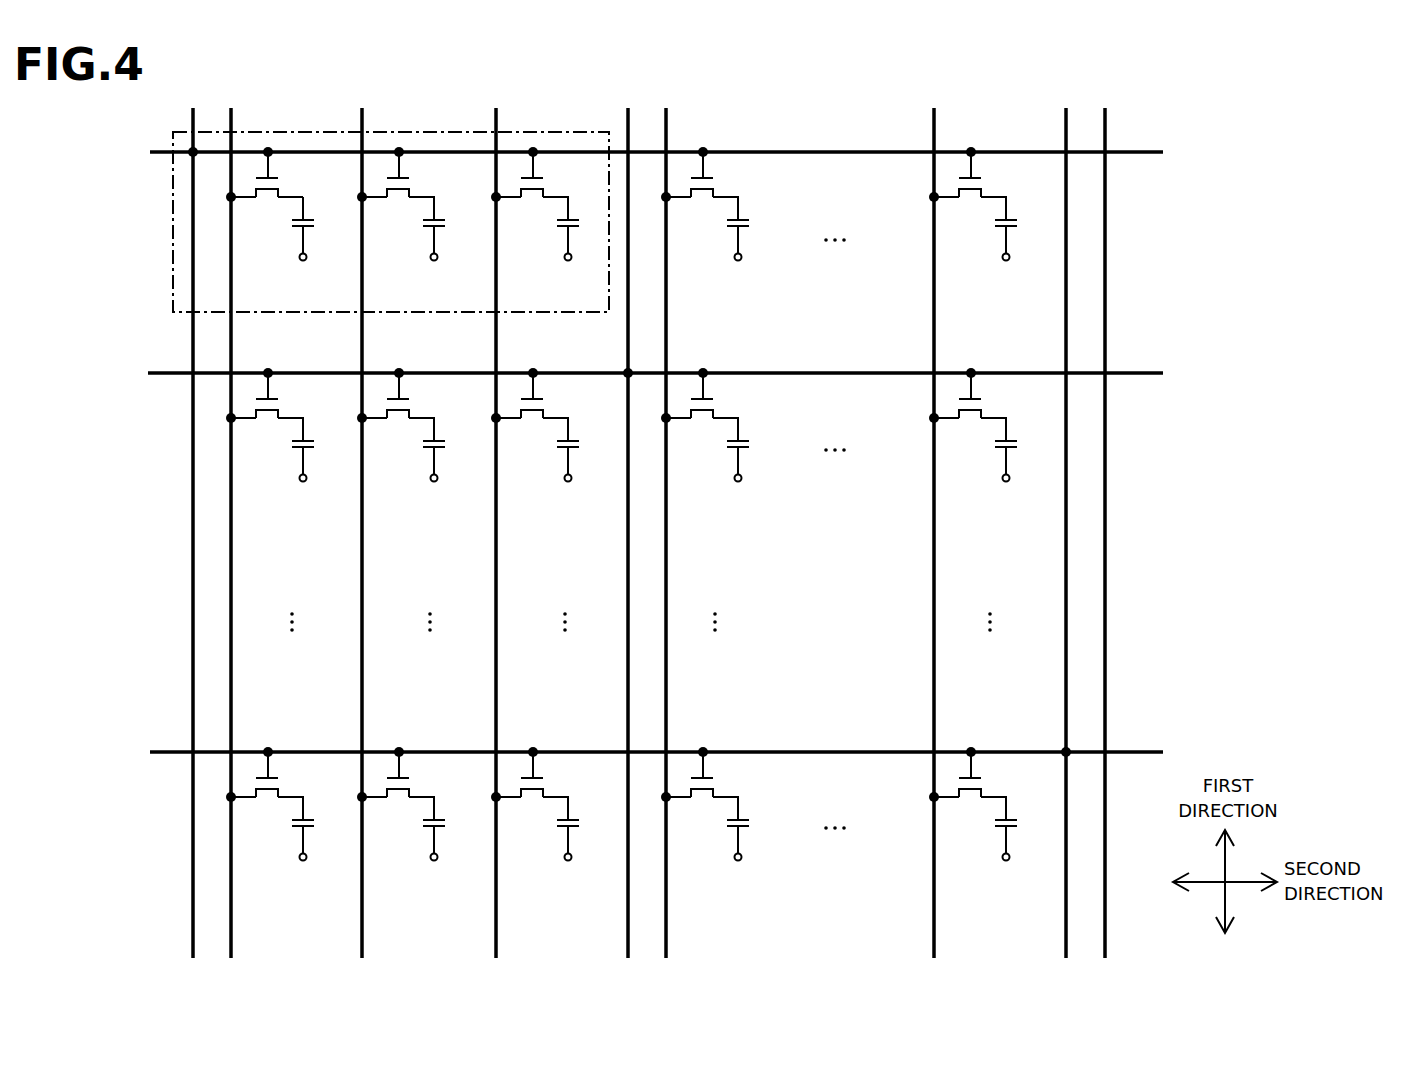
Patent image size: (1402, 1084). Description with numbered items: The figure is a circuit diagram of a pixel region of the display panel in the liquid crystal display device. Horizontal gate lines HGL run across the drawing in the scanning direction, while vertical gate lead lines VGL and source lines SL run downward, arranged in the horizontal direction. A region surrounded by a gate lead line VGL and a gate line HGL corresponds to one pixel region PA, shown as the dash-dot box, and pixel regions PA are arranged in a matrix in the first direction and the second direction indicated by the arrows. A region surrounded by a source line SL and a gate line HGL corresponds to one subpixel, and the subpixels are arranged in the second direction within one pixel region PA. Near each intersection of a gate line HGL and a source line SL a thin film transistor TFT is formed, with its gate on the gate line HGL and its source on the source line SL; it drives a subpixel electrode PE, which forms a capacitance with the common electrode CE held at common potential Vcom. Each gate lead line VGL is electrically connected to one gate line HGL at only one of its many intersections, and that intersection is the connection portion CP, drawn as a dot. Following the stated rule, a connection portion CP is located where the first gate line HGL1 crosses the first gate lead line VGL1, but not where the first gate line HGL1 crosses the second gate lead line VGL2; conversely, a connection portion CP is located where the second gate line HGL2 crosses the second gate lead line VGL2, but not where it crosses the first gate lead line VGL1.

The first gate lead line VGL1 is at (193, 108).
The second gate lead line VGL2 is at (628, 108).
The gate lead line VGL is at (1066, 108).
The first gate line HGL1 is at (150, 152).
The second gate line HGL2 is at (148, 373).
The gate line HGL is at (150, 752).
The source line SL is at (231, 108).
The connection portion CP is at (193, 152).
The pixel region PA is at (173, 290).
The thin film transistor TFT is at (263, 205).
The subpixel electrode PE is at (305, 219).
The common electrode CE is at (305, 227).
The common potential Vcom is at (300, 262).